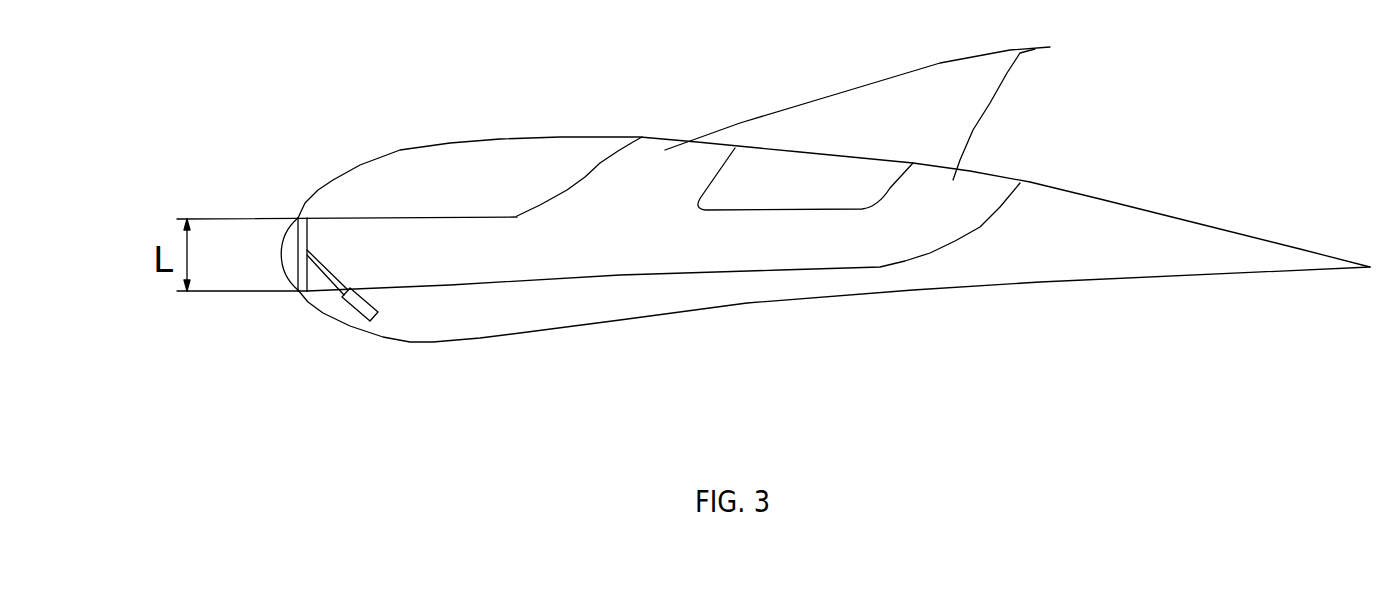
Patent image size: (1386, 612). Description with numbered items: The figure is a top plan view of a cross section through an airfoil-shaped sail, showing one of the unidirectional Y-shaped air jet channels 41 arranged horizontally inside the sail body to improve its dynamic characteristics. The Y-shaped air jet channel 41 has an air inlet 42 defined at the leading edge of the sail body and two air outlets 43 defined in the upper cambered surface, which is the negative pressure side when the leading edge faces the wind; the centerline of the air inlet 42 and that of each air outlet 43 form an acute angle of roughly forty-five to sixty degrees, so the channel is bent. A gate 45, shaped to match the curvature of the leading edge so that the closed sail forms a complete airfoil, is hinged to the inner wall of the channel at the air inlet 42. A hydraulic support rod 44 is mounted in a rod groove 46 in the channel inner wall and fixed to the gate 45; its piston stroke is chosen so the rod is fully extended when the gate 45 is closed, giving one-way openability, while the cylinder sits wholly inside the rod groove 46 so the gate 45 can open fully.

The Y-shaped air jet channel 41 is at (834, 291).
The air inlet 42 is at (201, 300).
The air outlet 43 is at (1035, 49).
The hydraulic support rod 44 is at (475, 162).
The gate 45 is at (293, 227).
The rod groove 46 is at (477, 365).